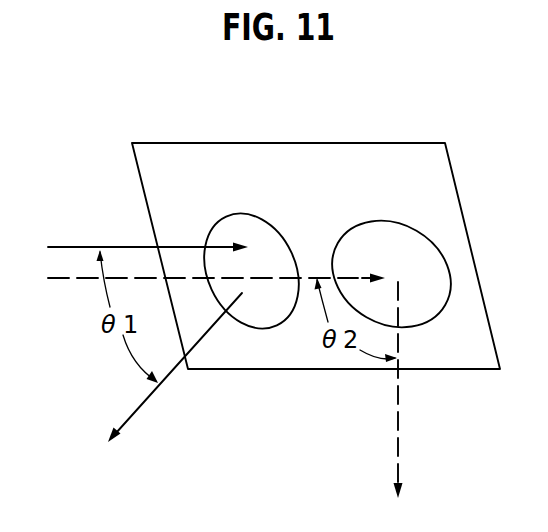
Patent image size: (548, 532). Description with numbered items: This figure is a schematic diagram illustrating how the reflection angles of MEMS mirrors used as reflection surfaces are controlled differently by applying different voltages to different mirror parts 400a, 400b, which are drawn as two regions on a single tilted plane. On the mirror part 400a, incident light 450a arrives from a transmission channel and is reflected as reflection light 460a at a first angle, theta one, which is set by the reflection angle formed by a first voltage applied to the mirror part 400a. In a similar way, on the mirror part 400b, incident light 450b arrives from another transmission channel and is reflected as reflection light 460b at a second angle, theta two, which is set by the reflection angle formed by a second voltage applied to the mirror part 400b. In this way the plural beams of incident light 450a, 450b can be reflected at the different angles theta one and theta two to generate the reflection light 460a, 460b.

The mirror part 400a is at (250, 230).
The mirror part 400b is at (399, 233).
The incident light 450a is at (58, 247).
The incident light 450b is at (62, 282).
The reflection light 460a is at (140, 410).
The reflection light 460b is at (400, 435).